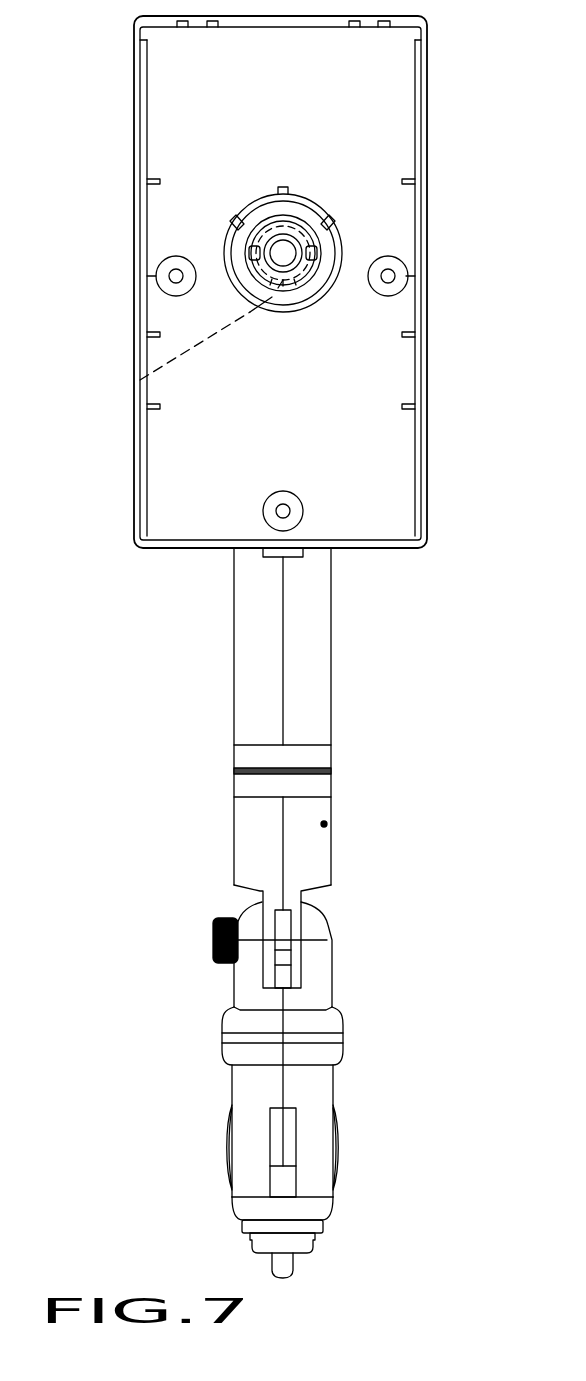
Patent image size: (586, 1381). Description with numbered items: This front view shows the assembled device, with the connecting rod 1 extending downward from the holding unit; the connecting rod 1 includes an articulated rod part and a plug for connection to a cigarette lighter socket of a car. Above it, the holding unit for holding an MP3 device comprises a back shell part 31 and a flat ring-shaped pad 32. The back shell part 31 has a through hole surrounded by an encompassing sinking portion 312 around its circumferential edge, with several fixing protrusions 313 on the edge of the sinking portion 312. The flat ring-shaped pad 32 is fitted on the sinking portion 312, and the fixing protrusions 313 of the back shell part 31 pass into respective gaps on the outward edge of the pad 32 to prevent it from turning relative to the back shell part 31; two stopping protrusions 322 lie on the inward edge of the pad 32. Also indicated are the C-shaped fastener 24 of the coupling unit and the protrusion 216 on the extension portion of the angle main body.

The connecting rod 1 is at (347, 768).
The C-shaped fastener 24 is at (310, 208).
The back shell part 31 is at (137, 482).
The flat ring-shaped pad 32 is at (307, 297).
The protrusion 216 is at (140, 380).
The encompassing sinking portion 312 is at (243, 212).
The fixing protrusions 313 is at (327, 227).
The stopping protrusions 322 is at (343, 242).